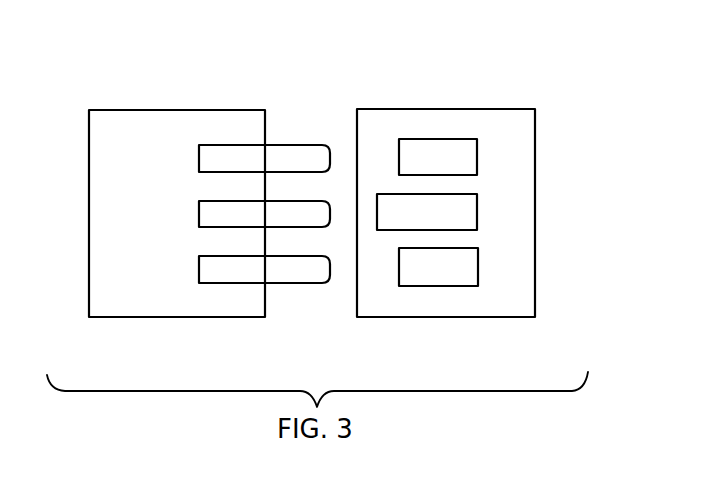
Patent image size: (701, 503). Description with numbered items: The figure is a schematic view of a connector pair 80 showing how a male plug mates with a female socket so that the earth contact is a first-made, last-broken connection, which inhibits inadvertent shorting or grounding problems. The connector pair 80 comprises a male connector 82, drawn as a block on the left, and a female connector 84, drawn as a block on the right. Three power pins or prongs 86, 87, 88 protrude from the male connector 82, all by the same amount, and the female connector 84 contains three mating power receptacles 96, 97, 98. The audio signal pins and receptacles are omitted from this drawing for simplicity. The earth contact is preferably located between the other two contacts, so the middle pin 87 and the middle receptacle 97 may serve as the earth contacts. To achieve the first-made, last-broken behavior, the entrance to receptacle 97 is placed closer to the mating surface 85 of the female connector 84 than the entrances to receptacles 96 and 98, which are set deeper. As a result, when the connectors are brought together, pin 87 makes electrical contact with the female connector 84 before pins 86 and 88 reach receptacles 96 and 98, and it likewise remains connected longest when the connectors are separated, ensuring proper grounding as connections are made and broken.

The connector pair 80 is at (336, 66).
The male connector 82 is at (108, 120).
The female connector 84 is at (530, 130).
The surface 85 is at (357, 283).
The power pin 86 is at (208, 156).
The power pin 87 is at (208, 212).
The power pin 88 is at (208, 268).
The power receptacle 96 is at (447, 145).
The power receptacle 97 is at (472, 209).
The power receptacle 98 is at (472, 270).